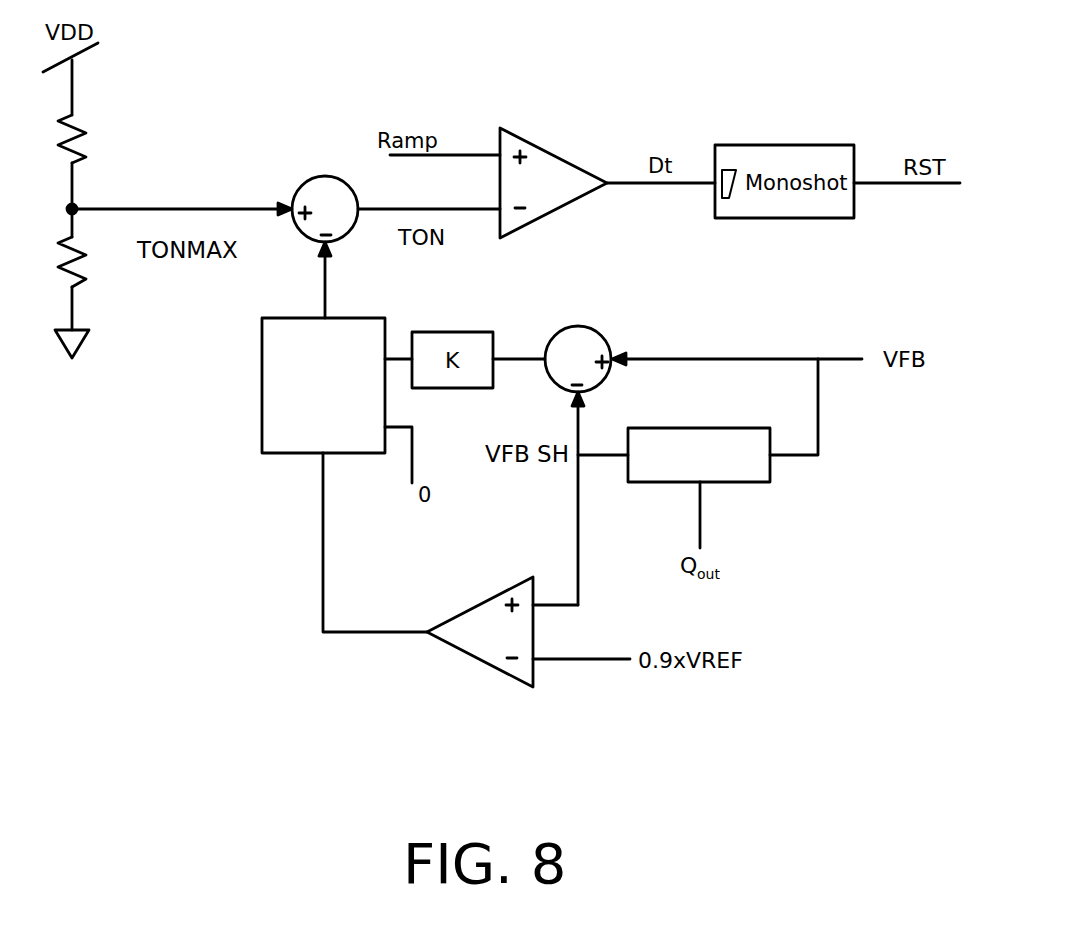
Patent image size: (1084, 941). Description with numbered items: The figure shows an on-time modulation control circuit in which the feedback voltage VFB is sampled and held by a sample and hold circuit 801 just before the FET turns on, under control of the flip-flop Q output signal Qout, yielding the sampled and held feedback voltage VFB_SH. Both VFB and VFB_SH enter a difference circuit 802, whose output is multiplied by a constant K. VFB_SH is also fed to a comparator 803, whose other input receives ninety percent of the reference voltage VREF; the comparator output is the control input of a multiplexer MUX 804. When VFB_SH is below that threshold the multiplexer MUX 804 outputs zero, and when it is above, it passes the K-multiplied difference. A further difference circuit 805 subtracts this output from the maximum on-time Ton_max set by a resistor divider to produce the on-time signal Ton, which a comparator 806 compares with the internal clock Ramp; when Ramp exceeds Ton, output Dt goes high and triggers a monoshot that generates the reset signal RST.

The sample and hold circuit 801 is at (748, 482).
The difference circuit 802 is at (597, 332).
The comparator 803 is at (473, 657).
The multiplexer MUX 804 is at (262, 391).
The difference circuit 805 is at (306, 176).
The comparator 806 is at (555, 153).